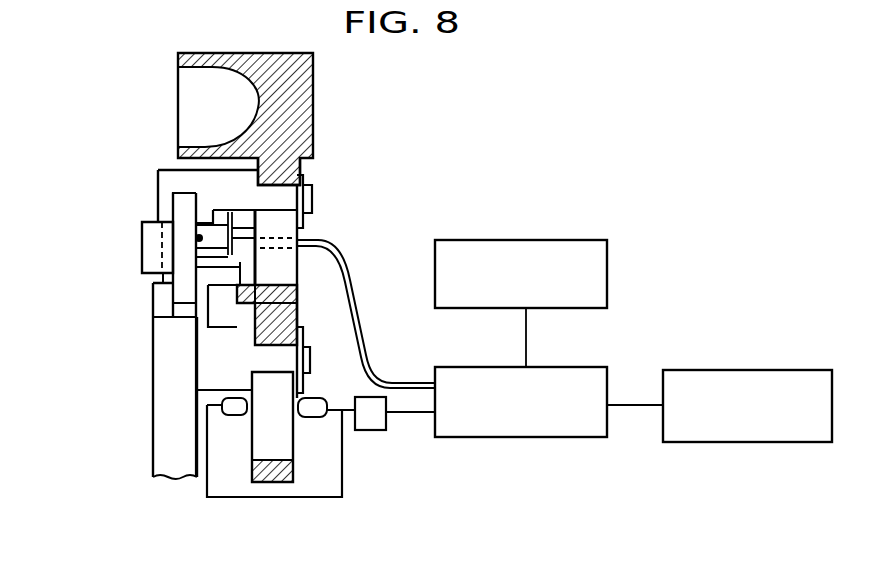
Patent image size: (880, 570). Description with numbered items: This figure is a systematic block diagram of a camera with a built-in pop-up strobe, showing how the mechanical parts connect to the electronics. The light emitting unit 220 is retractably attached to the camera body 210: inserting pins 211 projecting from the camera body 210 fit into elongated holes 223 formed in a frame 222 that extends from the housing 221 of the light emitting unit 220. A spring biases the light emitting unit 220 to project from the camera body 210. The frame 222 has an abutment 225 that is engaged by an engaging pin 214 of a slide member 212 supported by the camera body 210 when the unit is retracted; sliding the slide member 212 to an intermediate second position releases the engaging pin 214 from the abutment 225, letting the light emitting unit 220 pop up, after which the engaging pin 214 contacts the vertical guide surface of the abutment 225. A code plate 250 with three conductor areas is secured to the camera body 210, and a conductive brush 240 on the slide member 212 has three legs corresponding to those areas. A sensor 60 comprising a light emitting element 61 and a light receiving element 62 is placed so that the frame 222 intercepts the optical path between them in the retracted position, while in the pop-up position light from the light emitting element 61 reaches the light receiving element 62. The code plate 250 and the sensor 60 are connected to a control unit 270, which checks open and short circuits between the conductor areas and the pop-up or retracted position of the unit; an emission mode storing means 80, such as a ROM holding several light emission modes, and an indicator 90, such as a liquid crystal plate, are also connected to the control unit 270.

The light emitting unit 220 is at (168, 92).
The housing 221 is at (313, 117).
The code plate 250 is at (242, 208).
The slide member 212 is at (142, 228).
The inserting pins 211 is at (312, 200).
The brush 240 is at (142, 257).
The engaging pin 214 is at (187, 315).
The elongated holes 223 is at (320, 273).
The abutment 225 is at (240, 305).
The frame 222 is at (255, 318).
The camera body 210 is at (160, 452).
The sensor 60 is at (372, 430).
The light emitting element 61 is at (237, 415).
The light receiving element 62 is at (315, 417).
The control unit 270 is at (522, 438).
The indicator 90 is at (608, 280).
The emission mode storing means 80 is at (725, 442).